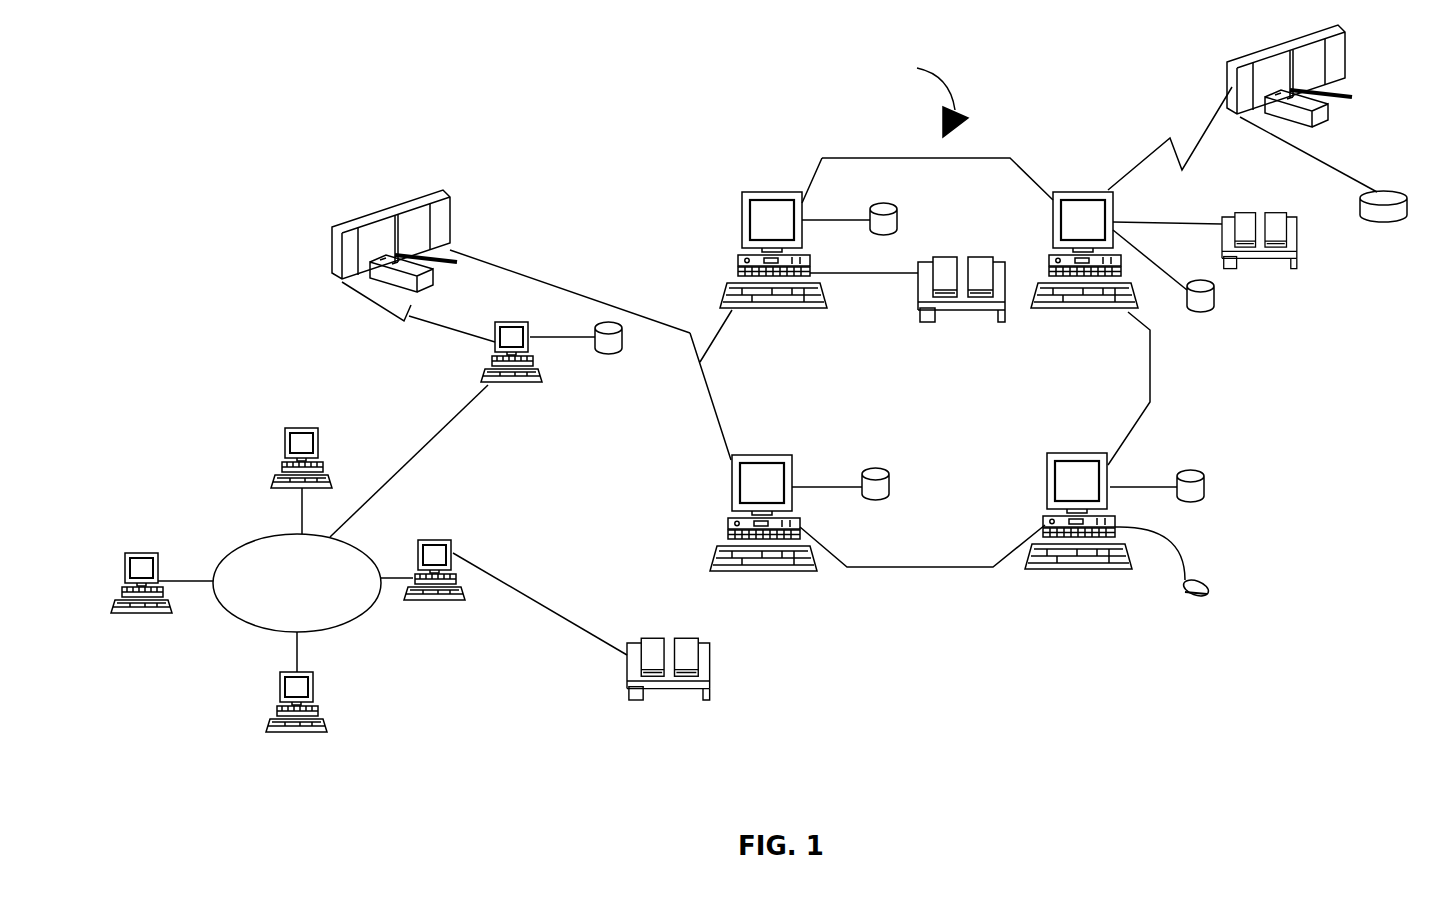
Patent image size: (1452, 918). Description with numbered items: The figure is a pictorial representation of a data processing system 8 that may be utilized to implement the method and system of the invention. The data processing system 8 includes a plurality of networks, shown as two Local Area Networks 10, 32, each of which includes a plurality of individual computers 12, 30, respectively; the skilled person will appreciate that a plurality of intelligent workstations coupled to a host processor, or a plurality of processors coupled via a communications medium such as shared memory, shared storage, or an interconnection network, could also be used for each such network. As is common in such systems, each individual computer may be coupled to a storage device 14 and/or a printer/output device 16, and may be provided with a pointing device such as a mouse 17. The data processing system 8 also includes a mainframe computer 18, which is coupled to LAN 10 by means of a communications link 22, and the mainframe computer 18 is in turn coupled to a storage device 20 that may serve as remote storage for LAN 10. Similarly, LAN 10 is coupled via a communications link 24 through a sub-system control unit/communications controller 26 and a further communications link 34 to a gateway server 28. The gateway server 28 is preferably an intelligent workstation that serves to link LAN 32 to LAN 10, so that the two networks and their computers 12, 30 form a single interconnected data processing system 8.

The data processing system 8 is at (928, 98).
The Local Area Network 10 is at (910, 568).
The individual computers 12 is at (758, 194).
The storage device 14 is at (897, 213).
The printer/output device 16 is at (958, 262).
The mouse 17 is at (1200, 583).
The mainframe computer 18 is at (1295, 43).
The storage device 20 is at (1394, 195).
The communications link 22 is at (1210, 118).
The communications link 24 is at (573, 302).
The sub-system control unit/communications controller 26 is at (450, 192).
The gateway server 28 is at (508, 325).
The individual computers 30 is at (294, 428).
The Local Area Network 32 is at (243, 622).
The communications link 34 is at (368, 293).